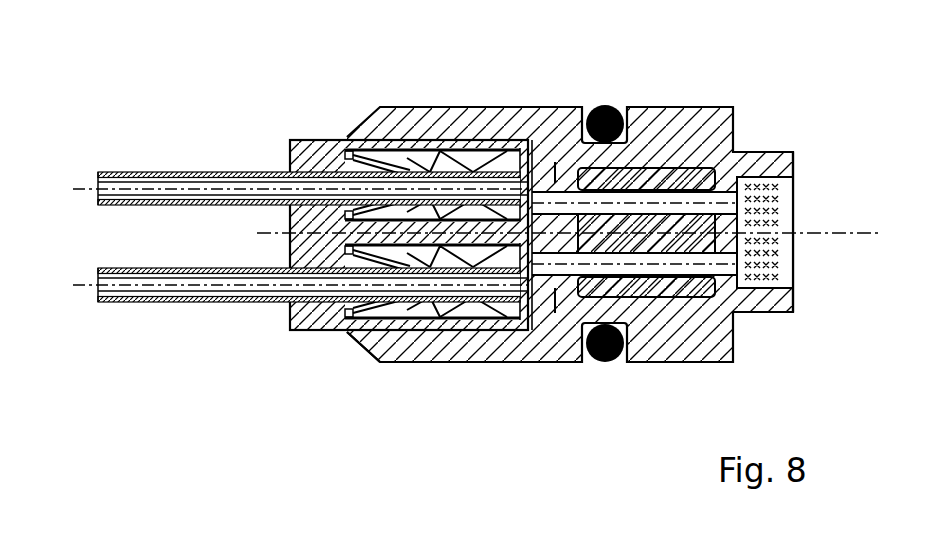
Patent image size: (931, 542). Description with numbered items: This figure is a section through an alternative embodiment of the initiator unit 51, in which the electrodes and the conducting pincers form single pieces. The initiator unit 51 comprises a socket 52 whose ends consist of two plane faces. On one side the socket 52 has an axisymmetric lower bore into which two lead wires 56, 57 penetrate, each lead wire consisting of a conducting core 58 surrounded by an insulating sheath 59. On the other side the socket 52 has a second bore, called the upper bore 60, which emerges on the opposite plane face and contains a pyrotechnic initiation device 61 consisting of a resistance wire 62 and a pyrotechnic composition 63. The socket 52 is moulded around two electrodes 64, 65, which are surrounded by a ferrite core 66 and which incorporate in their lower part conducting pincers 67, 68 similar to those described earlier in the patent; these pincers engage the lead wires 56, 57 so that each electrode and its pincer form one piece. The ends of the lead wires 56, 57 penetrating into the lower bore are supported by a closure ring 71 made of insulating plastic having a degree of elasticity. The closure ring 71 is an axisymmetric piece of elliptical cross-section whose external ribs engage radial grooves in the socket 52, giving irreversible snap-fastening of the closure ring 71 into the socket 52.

The initiator unit 51 is at (574, 231).
The socket 52 is at (695, 115).
The lead wire 56 is at (280, 159).
The lead wire 57 is at (97, 287).
The conducting core 58 is at (132, 185).
The insulating sheath 59 is at (205, 172).
The upper bore 60 is at (777, 177).
The pyrotechnic initiation device 61 is at (572, 193).
The resistance wire 62 is at (747, 237).
The pyrotechnic composition 63 is at (783, 255).
The electrode 64 is at (707, 162).
The electrode 65 is at (712, 297).
The ferrite core 66 is at (662, 283).
The conducting pincer 67 is at (380, 335).
The conducting pincer 68 is at (405, 152).
The closure ring 71 is at (317, 150).